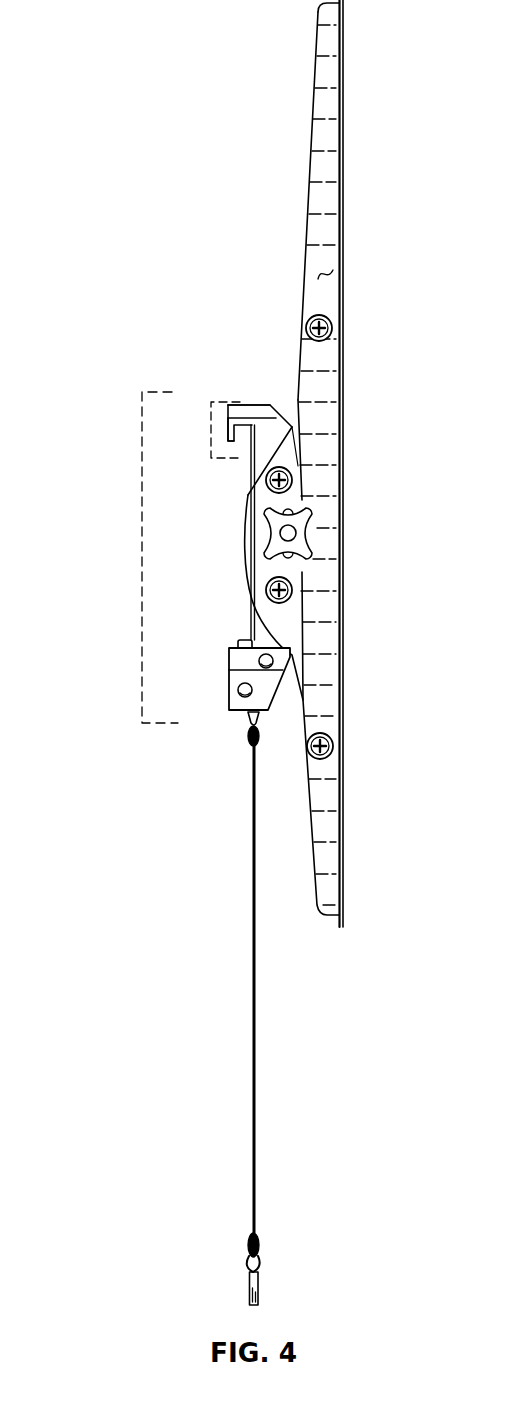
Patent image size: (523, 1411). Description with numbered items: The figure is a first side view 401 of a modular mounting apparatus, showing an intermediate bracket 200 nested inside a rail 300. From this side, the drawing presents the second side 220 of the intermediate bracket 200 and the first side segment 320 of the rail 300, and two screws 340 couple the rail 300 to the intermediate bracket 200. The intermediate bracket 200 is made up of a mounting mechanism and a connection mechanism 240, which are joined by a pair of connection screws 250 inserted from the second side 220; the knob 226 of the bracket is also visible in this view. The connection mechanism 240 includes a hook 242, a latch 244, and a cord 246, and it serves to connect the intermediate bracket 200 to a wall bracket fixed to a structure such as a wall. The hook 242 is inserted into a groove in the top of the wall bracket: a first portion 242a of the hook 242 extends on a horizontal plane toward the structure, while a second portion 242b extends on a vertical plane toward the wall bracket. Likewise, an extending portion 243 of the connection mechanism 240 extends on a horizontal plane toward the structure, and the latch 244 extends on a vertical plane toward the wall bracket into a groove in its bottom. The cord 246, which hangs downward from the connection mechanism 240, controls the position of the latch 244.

The first side view 401 is at (100, 83).
The rail 300 is at (341, 97).
The first side segment 320 is at (340, 274).
The screws 340 is at (333, 328).
The intermediate bracket 200 is at (248, 572).
The second side 220 is at (253, 500).
The knob 226 is at (313, 548).
The connection screws 250 is at (292, 478).
The connection mechanism 240 is at (142, 594).
The hook 242 is at (210, 422).
The first portion of the hook 242a is at (237, 403).
The second portion of the hook 242b is at (228, 441).
The extending portion 243 is at (229, 690).
The latch 244 is at (238, 645).
The cord 246 is at (256, 1000).